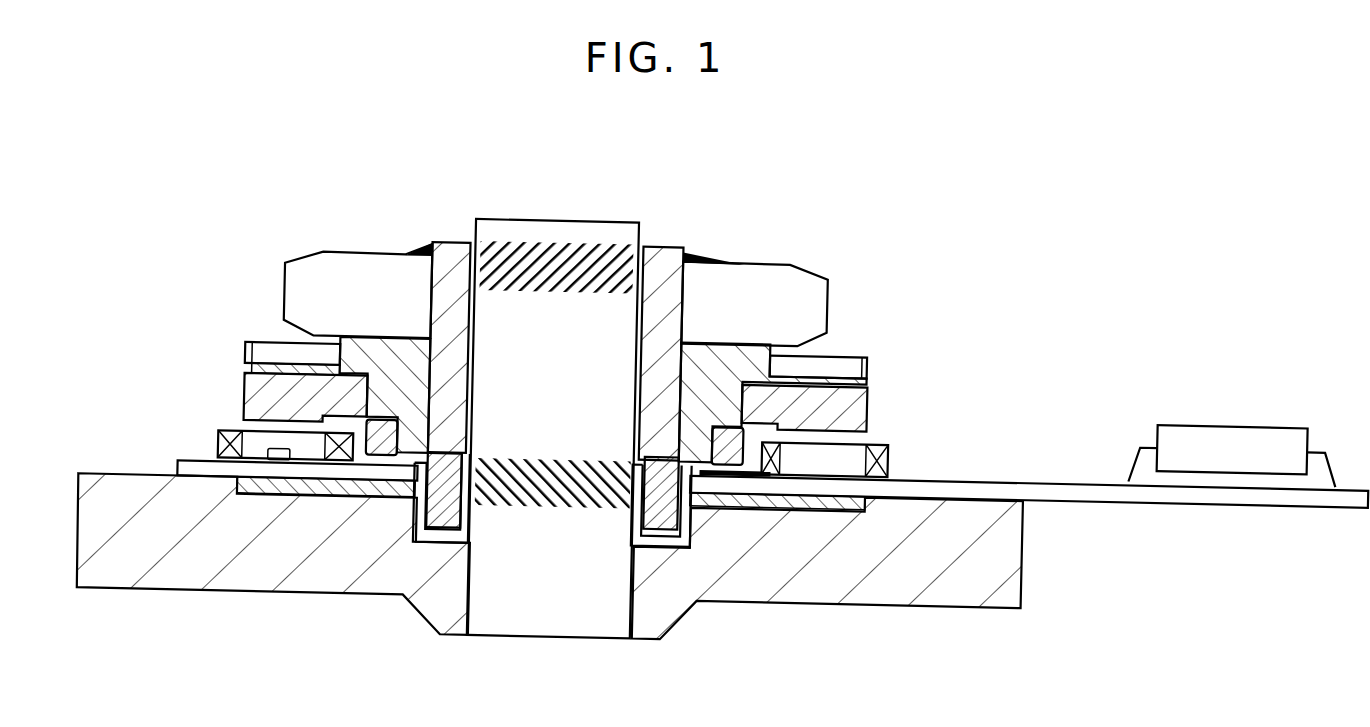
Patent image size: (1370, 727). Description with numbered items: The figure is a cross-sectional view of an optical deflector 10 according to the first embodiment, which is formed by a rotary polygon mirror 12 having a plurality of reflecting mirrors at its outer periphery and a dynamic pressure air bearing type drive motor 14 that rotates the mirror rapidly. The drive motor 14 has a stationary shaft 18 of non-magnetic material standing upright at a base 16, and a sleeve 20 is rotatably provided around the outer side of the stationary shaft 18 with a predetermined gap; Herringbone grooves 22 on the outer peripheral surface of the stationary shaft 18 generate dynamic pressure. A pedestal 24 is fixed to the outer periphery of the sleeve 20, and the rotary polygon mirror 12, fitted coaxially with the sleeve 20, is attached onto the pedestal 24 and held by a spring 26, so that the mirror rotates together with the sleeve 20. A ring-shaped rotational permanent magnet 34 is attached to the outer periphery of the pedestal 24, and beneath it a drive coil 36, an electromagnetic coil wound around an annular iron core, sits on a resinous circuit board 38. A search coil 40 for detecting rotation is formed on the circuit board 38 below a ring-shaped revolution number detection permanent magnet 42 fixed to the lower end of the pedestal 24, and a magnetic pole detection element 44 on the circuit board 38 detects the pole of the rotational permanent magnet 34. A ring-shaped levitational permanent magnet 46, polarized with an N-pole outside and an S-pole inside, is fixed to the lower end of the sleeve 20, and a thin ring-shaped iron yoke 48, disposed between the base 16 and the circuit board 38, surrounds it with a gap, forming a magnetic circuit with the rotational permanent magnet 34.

The optical deflector 10 is at (915, 207).
The rotary polygon mirror 12 is at (823, 300).
The drive motor 14 is at (890, 360).
The base 16 is at (1010, 573).
The stationary shaft 18 is at (553, 228).
The sleeve 20 is at (675, 252).
The Herringbone grooves 22 is at (569, 292).
The pedestal 24 is at (740, 357).
The spring 26 is at (705, 262).
The rotational permanent magnet 34 is at (870, 392).
The drive coil 36 is at (888, 457).
The circuit board 38 is at (1067, 487).
The search coil 40 is at (723, 478).
The revolution number detection permanent magnet 42 is at (722, 433).
The magnetic pole detection element 44 is at (280, 452).
The levitational permanent magnet 46 is at (433, 545).
The yoke 48 is at (853, 513).